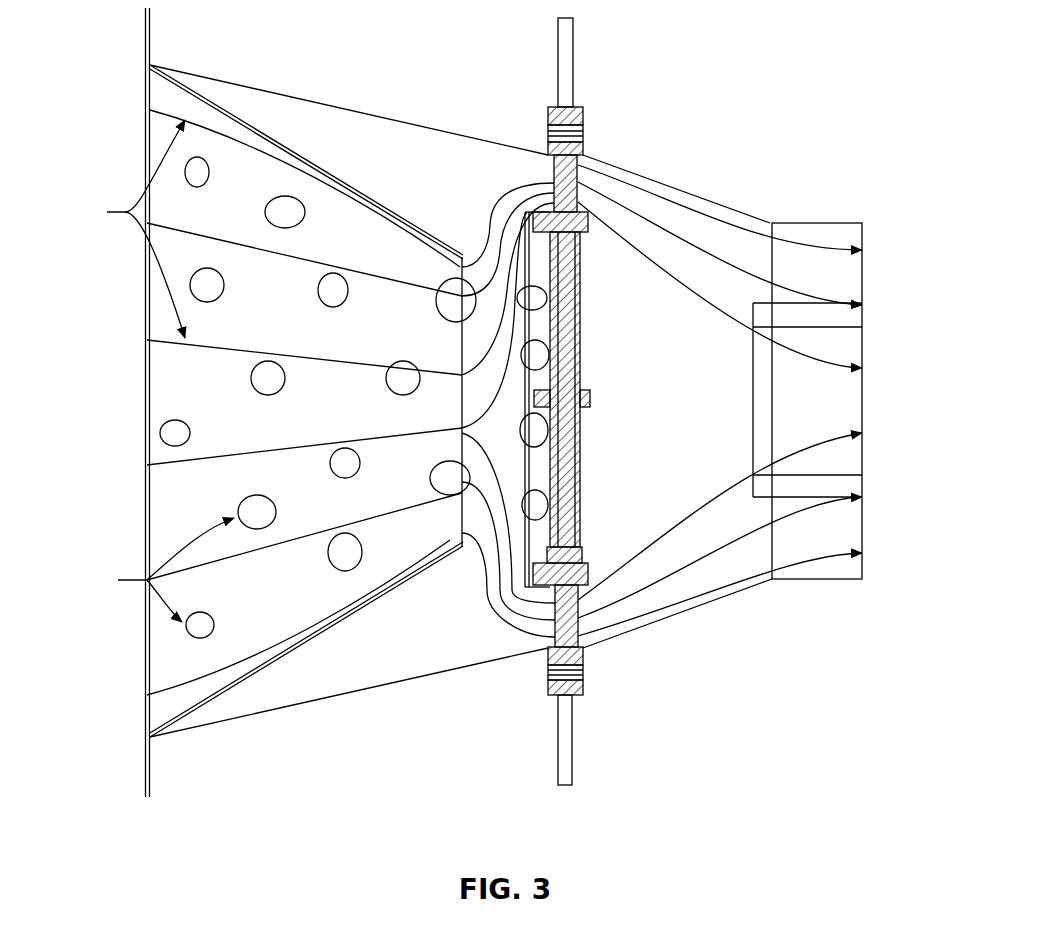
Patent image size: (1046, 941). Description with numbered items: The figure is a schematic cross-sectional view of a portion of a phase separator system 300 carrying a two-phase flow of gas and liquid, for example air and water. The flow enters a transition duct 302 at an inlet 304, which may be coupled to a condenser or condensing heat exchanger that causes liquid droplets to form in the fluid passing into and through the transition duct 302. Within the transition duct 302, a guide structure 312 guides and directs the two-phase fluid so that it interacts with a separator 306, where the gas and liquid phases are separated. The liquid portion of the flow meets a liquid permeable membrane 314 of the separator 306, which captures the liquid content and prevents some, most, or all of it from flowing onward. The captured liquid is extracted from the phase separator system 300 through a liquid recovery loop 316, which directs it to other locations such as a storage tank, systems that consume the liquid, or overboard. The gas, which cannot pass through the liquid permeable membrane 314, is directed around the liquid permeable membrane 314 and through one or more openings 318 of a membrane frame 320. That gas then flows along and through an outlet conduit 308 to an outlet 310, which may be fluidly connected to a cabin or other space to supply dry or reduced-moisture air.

The phase separator system 300 is at (830, 60).
The transition duct 302 is at (331, 104).
The inlet 304 is at (128, 405).
The separator 306 is at (528, 778).
The outlet conduit 308 is at (698, 193).
The outlet 310 is at (872, 508).
The guide structure 312 is at (339, 624).
The liquid permeable membrane 314 is at (537, 270).
The liquid recovery loop 316 is at (576, 44).
The openings 318 is at (548, 183).
The membrane frame 320 is at (584, 152).